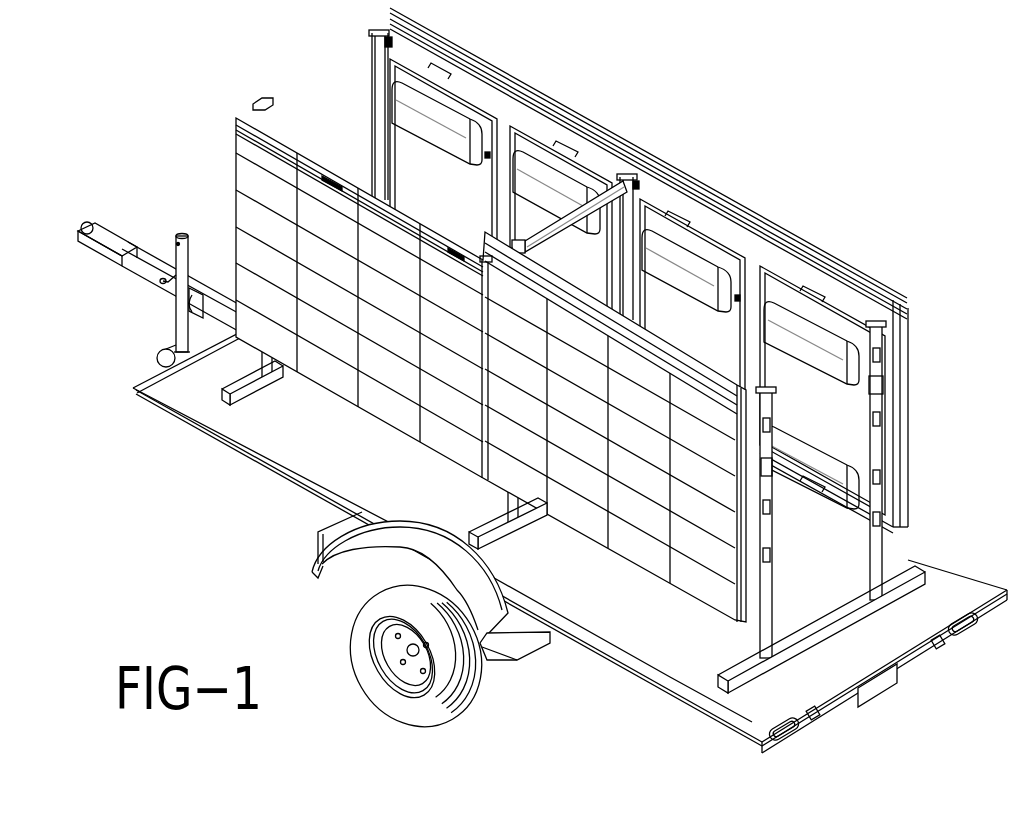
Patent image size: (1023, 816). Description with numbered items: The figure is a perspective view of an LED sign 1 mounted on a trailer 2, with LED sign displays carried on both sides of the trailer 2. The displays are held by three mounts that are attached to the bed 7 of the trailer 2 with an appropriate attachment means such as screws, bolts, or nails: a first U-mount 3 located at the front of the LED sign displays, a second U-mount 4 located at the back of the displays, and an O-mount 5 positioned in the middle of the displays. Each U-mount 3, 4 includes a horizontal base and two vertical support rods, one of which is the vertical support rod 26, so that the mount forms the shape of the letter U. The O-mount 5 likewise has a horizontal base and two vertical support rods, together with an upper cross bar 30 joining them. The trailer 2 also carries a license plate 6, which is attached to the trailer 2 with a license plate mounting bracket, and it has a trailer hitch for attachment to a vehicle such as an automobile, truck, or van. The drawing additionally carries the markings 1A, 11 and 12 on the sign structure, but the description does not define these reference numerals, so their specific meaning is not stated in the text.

The LED sign 1 is at (510, 315).
The corner detail area 1A is at (230, 110).
The trailer 2 is at (264, 478).
The first U-mount 3 is at (226, 400).
The second U-mount 4 is at (718, 700).
The O-mount 5 is at (510, 545).
The license plate 6 is at (876, 688).
The bed 7 is at (862, 648).
The grid display face 11 is at (266, 233).
The top rail 12 is at (700, 178).
The vertical support rod 26 is at (868, 572).
The upper cross bar 30 is at (604, 198).